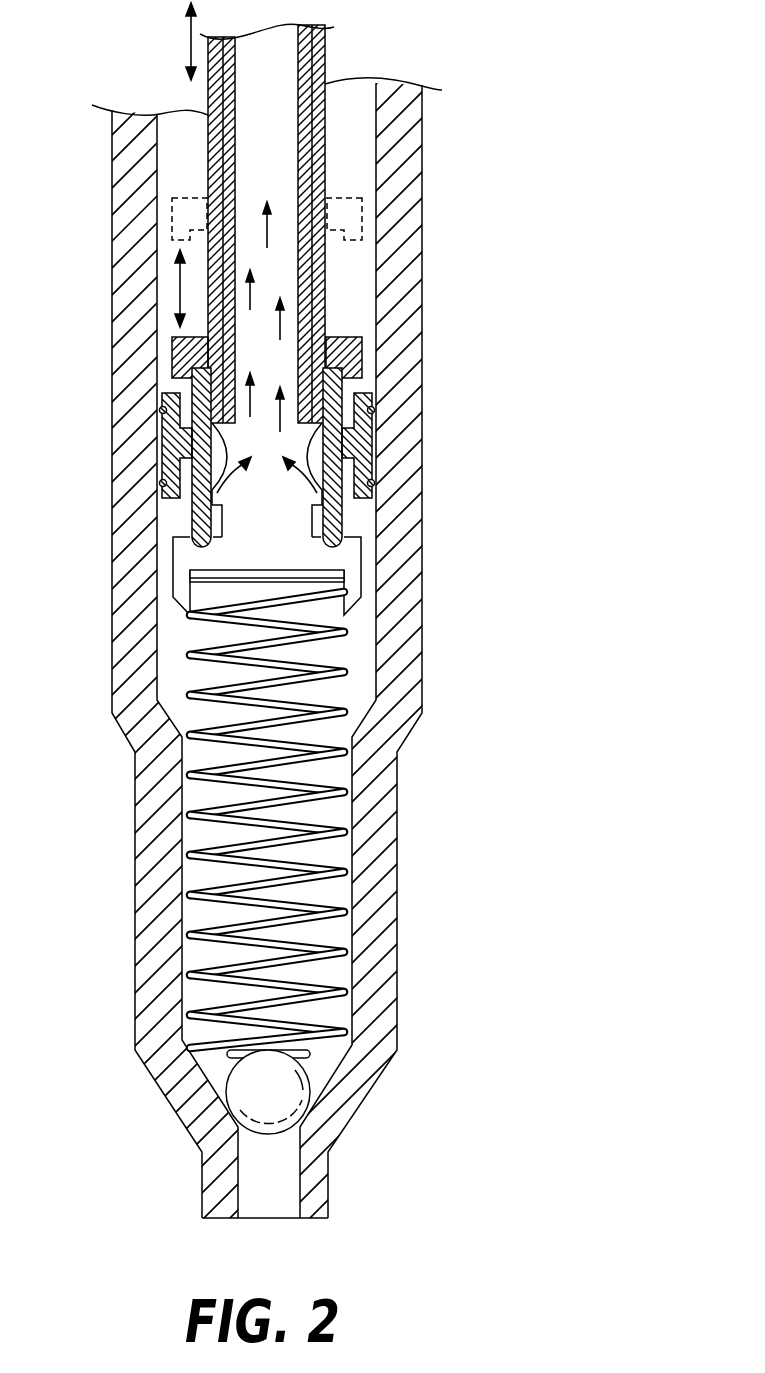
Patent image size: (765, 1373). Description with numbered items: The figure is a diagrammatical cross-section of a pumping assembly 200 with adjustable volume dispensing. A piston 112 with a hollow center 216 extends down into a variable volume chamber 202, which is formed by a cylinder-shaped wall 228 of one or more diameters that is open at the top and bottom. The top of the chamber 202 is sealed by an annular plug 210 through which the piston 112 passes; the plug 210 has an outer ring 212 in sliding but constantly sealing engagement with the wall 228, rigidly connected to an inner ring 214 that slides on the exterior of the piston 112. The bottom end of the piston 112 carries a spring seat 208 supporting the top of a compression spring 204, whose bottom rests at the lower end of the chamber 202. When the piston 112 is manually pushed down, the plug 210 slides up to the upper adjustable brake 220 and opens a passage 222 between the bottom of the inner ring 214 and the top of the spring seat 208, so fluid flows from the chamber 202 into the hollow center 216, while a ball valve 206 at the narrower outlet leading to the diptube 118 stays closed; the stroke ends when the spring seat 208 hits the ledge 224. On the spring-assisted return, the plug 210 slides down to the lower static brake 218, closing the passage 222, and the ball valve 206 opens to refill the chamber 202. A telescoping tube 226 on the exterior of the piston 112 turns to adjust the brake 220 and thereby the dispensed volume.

The pumping assembly 200 is at (521, 90).
The piston 112 is at (323, 38).
The telescoping tube 226 is at (210, 163).
The hollow center 216 is at (280, 165).
The upper adjustable brake 220 is at (172, 208).
The inner ring 214 is at (337, 390).
The outer ring 212 is at (366, 394).
The annular plug 210 is at (382, 439).
The lower static brake 218 is at (176, 535).
The passage 222 is at (352, 528).
The spring seat 208 is at (352, 575).
The compression spring 204 is at (200, 650).
The variable volume chamber 202 is at (360, 652).
The ledge 224 is at (375, 712).
The cylinder-shaped wall 228 is at (135, 888).
The ball valve 206 is at (240, 1096).
The diptube 118 is at (327, 1181).